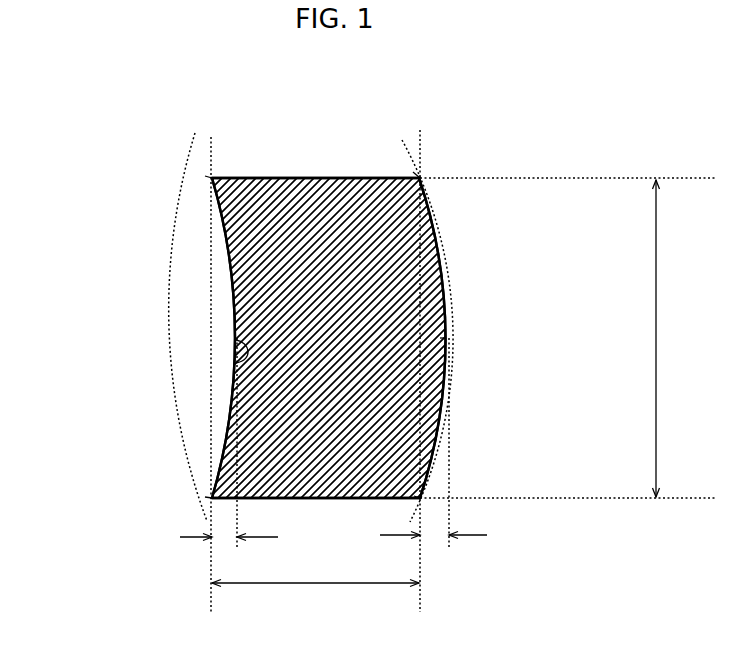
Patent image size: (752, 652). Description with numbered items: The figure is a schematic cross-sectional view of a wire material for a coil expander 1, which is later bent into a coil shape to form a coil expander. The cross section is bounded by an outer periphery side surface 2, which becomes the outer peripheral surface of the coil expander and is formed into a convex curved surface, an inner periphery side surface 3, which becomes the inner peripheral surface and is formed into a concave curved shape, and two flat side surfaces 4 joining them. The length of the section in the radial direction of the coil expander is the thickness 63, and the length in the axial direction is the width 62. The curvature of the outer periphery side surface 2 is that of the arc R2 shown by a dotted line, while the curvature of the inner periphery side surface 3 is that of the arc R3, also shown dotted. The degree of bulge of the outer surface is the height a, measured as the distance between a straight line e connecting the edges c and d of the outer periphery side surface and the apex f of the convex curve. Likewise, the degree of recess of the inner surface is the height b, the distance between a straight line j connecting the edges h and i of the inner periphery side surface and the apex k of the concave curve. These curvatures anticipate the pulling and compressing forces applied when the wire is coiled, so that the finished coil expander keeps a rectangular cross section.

The wire material for a coil expander 1 is at (347, 110).
The outer periphery side surface 2 is at (445, 272).
The inner periphery side surface 3 is at (232, 275).
The side surfaces 4 is at (258, 178).
The width of the wire material for a coil expander 62 is at (567, 338).
The thickness of the wire material for a coil expander 63 is at (315, 598).
The arc of the outer periphery side surface R2 is at (408, 158).
The arc of the inner periphery side surface R3 is at (200, 160).
The height of the outer convex curved surface a is at (433, 443).
The height of the inner concave curved surface b is at (229, 443).
The edge of the outer periphery side surface c is at (420, 178).
The edge of the outer periphery side surface d is at (420, 498).
The straight line connecting edges c and d e is at (419, 358).
The apex of the convex curved surface f is at (445, 338).
The edge of the inner periphery side surface h is at (212, 178).
The edge of the inner periphery side surface i is at (212, 498).
The straight line connecting edges h and i j is at (207, 357).
The apex of the concave curved surface k is at (235, 370).